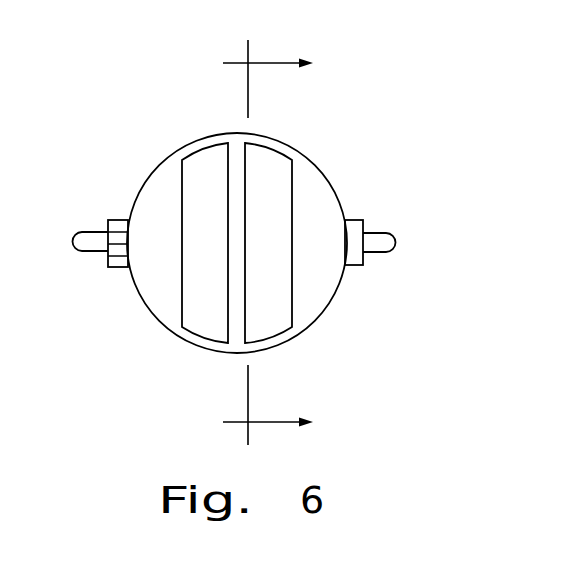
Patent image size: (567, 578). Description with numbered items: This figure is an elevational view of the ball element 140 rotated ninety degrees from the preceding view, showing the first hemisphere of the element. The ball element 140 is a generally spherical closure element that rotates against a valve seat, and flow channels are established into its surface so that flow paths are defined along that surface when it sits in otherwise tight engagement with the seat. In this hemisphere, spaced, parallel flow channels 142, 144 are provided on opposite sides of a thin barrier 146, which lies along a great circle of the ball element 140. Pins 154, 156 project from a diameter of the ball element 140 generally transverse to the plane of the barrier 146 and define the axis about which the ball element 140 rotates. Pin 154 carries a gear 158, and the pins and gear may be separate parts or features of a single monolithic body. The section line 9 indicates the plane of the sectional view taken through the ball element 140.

The ball element 140 is at (152, 185).
The flow channel 142 is at (200, 168).
The flow channel 144 is at (278, 170).
The thin barrier 146 is at (235, 155).
The pin 154 is at (82, 233).
The pin 156 is at (391, 233).
The gear 158 is at (120, 268).
The section line 9- 9 is at (279, 242).